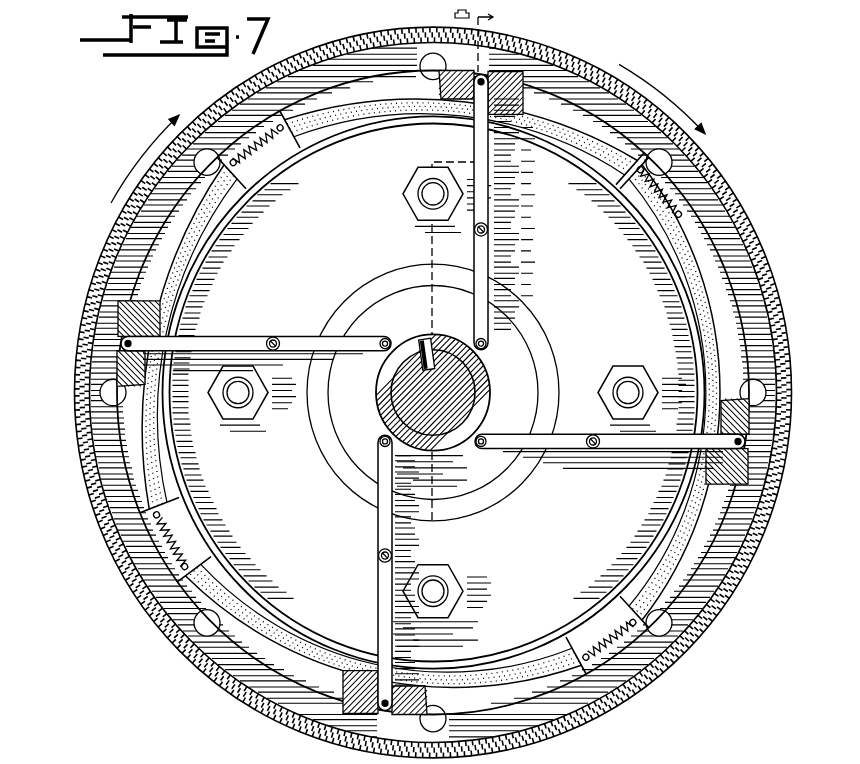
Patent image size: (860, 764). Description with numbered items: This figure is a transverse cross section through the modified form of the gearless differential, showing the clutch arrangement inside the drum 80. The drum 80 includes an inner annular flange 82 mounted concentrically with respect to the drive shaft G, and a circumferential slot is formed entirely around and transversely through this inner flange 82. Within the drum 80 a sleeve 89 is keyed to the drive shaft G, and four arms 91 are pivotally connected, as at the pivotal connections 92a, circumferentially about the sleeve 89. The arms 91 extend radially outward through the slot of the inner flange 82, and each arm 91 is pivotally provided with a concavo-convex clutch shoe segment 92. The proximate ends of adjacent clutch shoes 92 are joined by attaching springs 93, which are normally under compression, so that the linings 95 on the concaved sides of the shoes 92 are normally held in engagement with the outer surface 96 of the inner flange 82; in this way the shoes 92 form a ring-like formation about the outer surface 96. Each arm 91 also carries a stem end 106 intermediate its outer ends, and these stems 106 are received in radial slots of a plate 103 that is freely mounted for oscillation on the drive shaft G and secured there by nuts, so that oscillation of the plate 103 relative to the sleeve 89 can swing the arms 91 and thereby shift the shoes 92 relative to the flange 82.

The drum 80 is at (356, 38).
The inner annular flange 82 is at (660, 557).
The sleeve 89 is at (488, 388).
The arms 91 is at (226, 338).
The clutch shoe segment 92 is at (543, 103).
The pivotal connection 92a is at (483, 447).
The attaching springs 93 is at (700, 198).
The linings 95 is at (607, 163).
The outer surface of inner flange 96 is at (707, 543).
The plate 103 is at (517, 627).
The stem ends 106 is at (276, 340).
The drive shaft G is at (410, 392).